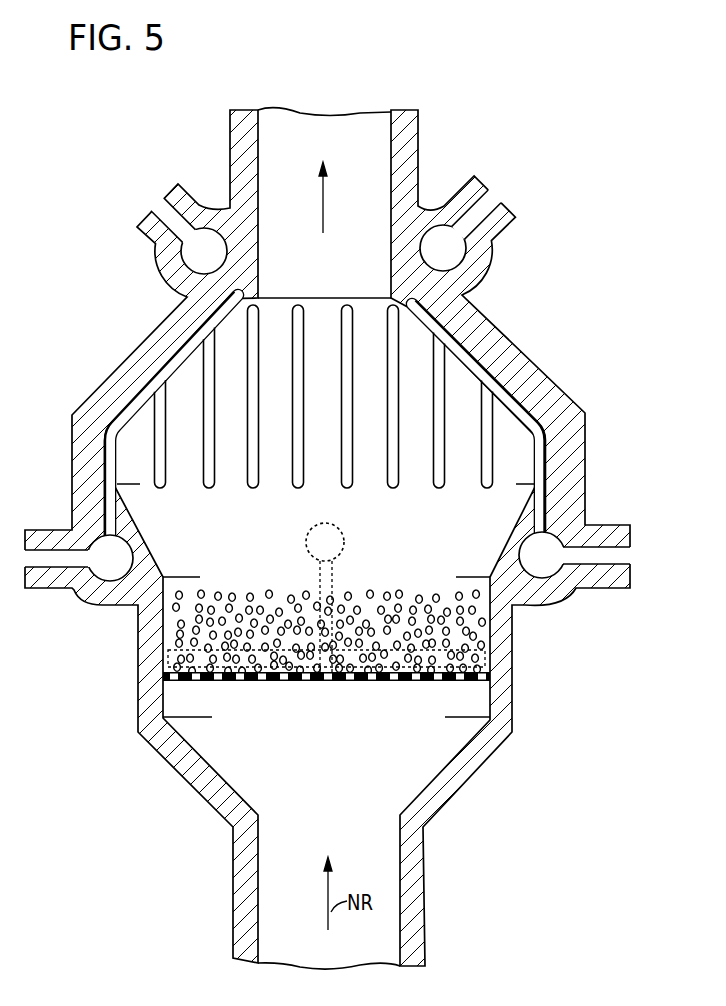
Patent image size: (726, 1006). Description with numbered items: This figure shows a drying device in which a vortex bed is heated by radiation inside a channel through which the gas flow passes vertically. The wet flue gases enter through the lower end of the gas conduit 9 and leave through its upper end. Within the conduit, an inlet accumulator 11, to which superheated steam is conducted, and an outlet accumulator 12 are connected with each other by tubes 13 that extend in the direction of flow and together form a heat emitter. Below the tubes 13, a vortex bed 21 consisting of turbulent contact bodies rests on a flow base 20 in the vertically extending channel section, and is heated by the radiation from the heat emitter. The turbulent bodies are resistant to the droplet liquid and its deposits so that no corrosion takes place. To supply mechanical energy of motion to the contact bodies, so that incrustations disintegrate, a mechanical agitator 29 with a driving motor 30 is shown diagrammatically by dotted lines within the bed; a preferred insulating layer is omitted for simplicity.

The gas conduit 9 is at (414, 135).
The inlet accumulator 11 is at (102, 572).
The outlet accumulator 12 is at (187, 256).
The tubes 13 is at (142, 400).
The flow base 20 is at (367, 682).
The vortex bed 21 is at (458, 640).
The mechanical agitator 29 is at (490, 662).
The driving motor 30 is at (345, 541).